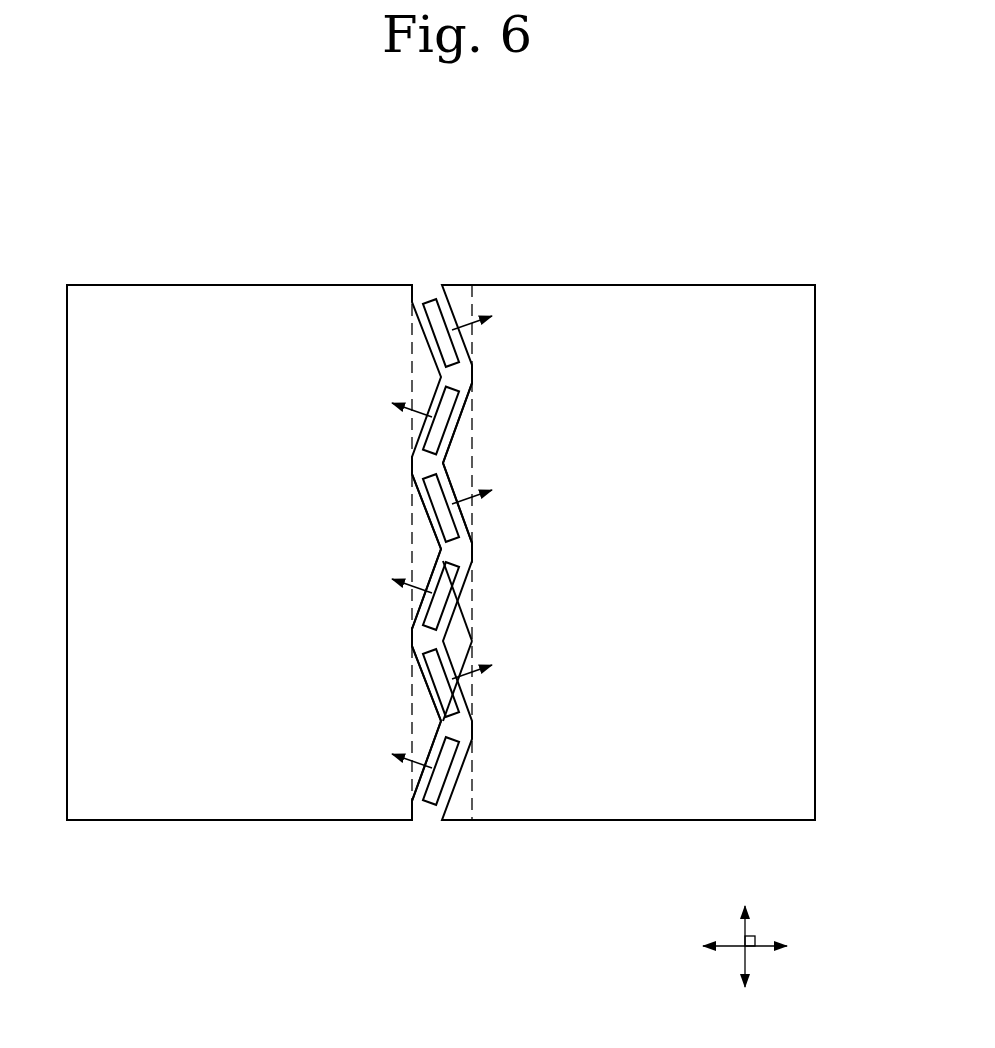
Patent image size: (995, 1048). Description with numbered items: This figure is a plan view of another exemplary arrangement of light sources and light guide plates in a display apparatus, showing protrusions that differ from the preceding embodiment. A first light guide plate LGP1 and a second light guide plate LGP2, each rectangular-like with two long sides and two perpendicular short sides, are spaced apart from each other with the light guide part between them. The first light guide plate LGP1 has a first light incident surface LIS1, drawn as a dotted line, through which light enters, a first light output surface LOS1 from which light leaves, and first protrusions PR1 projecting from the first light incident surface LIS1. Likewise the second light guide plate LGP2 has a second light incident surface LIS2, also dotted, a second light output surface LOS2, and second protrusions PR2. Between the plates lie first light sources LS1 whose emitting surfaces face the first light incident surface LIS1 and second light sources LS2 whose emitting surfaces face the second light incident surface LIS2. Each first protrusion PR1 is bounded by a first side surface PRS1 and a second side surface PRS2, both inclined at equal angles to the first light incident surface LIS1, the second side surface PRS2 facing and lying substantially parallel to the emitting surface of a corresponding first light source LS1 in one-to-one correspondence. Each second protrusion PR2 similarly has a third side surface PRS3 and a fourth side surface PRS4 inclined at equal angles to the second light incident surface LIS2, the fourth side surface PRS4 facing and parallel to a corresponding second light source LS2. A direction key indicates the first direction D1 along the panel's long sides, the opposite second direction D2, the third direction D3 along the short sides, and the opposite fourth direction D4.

The first light guide plate LGP1 is at (114, 274).
The second light guide plate LGP2 is at (779, 274).
The first light output surface LOS1 is at (232, 300).
The second light output surface LOS2 is at (663, 300).
The first light incident surface LIS1 is at (412, 464).
The second light incident surface LIS2 is at (473, 378).
The first protrusion PR1 is at (422, 548).
The second protrusion PR2 is at (462, 467).
The first side surface PRS1 is at (425, 683).
The second side surface PRS2 is at (432, 745).
The third side surface PRS3 is at (460, 602).
The fourth side surface PRS4 is at (450, 652).
The first light source LS1 is at (435, 780).
The second light source LS2 is at (448, 340).
The first direction D1 is at (702, 947).
The second direction D2 is at (787, 947).
The third direction D3 is at (744, 904).
The fourth direction D4 is at (744, 988).